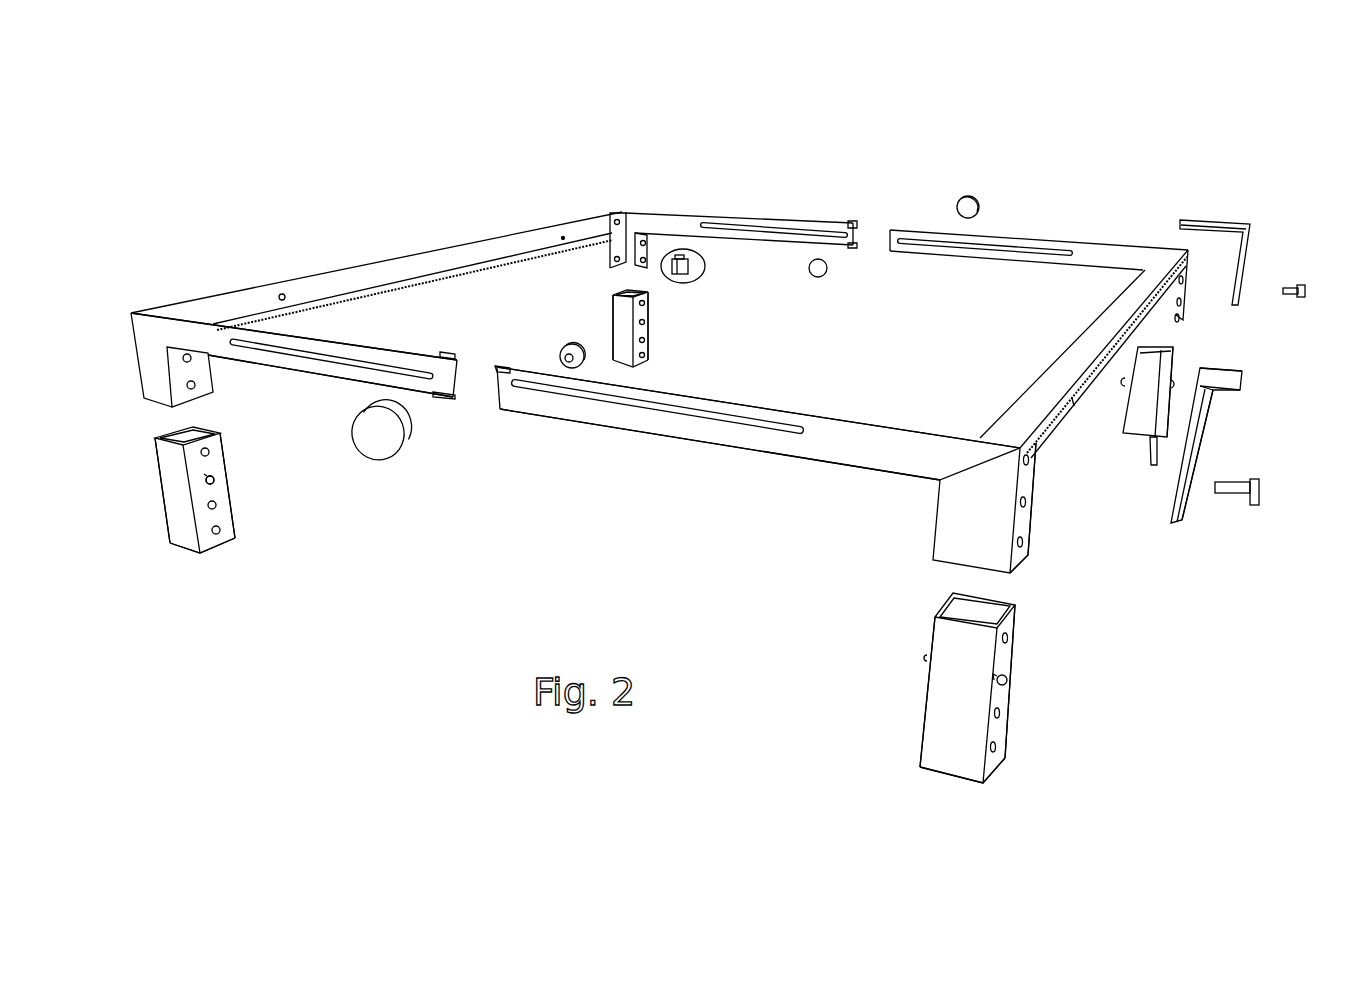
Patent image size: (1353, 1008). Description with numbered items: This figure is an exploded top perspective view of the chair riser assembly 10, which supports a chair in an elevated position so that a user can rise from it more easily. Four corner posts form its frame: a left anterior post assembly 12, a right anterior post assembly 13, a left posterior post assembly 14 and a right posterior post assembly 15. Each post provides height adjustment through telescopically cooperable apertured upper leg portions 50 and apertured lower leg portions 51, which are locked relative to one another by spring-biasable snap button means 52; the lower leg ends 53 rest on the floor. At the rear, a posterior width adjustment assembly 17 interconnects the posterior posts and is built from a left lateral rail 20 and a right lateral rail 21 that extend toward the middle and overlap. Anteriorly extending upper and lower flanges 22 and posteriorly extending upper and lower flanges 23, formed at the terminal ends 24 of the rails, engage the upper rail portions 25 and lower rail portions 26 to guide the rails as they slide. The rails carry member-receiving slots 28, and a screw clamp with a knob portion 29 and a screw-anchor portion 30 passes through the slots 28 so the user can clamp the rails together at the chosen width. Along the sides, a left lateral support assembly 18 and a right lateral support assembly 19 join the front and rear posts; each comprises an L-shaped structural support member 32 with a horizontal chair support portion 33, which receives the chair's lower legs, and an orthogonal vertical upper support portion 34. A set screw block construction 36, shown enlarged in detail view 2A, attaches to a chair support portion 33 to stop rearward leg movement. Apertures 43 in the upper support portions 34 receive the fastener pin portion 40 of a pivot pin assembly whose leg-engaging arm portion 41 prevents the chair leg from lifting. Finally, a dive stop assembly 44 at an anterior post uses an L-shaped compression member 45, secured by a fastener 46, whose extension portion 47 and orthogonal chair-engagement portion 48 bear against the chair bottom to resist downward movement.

The chair riser assembly 10 is at (1146, 140).
The left anterior post assembly 12 is at (907, 786).
The right anterior post assembly 13 is at (224, 573).
The left posterior post assembly 14 is at (1131, 452).
The right posterior post assembly 15 is at (593, 290).
The posterior width adjustment assembly 17 is at (907, 175).
The left lateral support assembly 18 is at (1046, 339).
The right lateral support assembly 19 is at (416, 192).
The left lateral rail 20 is at (853, 449).
The right lateral rail 21 is at (323, 371).
The anteriorly extending upper and lower flanges 22 is at (446, 356).
The posteriorly extending upper and lower flanges 23 is at (506, 364).
The terminal ends 24 is at (450, 406).
The upper rail portions 25 is at (372, 348).
The lower rail portions 26 is at (354, 386).
The member-receiving slots 28 is at (283, 354).
The knob portion 29 is at (383, 460).
The screw-anchor portion 30 is at (574, 344).
The L-shaped structural support member 32 is at (578, 236).
The chair support portion 33 is at (470, 270).
The upper support portion 34 is at (346, 279).
The set screw block construction 36 is at (686, 282).
The fastener pin portion 40 is at (1294, 286).
The leg-engaging arm portion 41 is at (1239, 219).
The apertures 43 is at (280, 294).
The dive stop assembly 44 is at (1211, 538).
The L-shaped compression member 45 is at (1214, 393).
The fastener 46 is at (1262, 491).
The extension portion 47 is at (1201, 451).
The chair-engagement portion 48 is at (1243, 376).
The apertured upper leg portion 50 is at (151, 403).
The apertured lower leg portion 51 is at (186, 549).
The spring-biasable snap button means 52 is at (212, 481).
The lower leg ends 53 is at (229, 534).
The detail view 2A is at (704, 267).